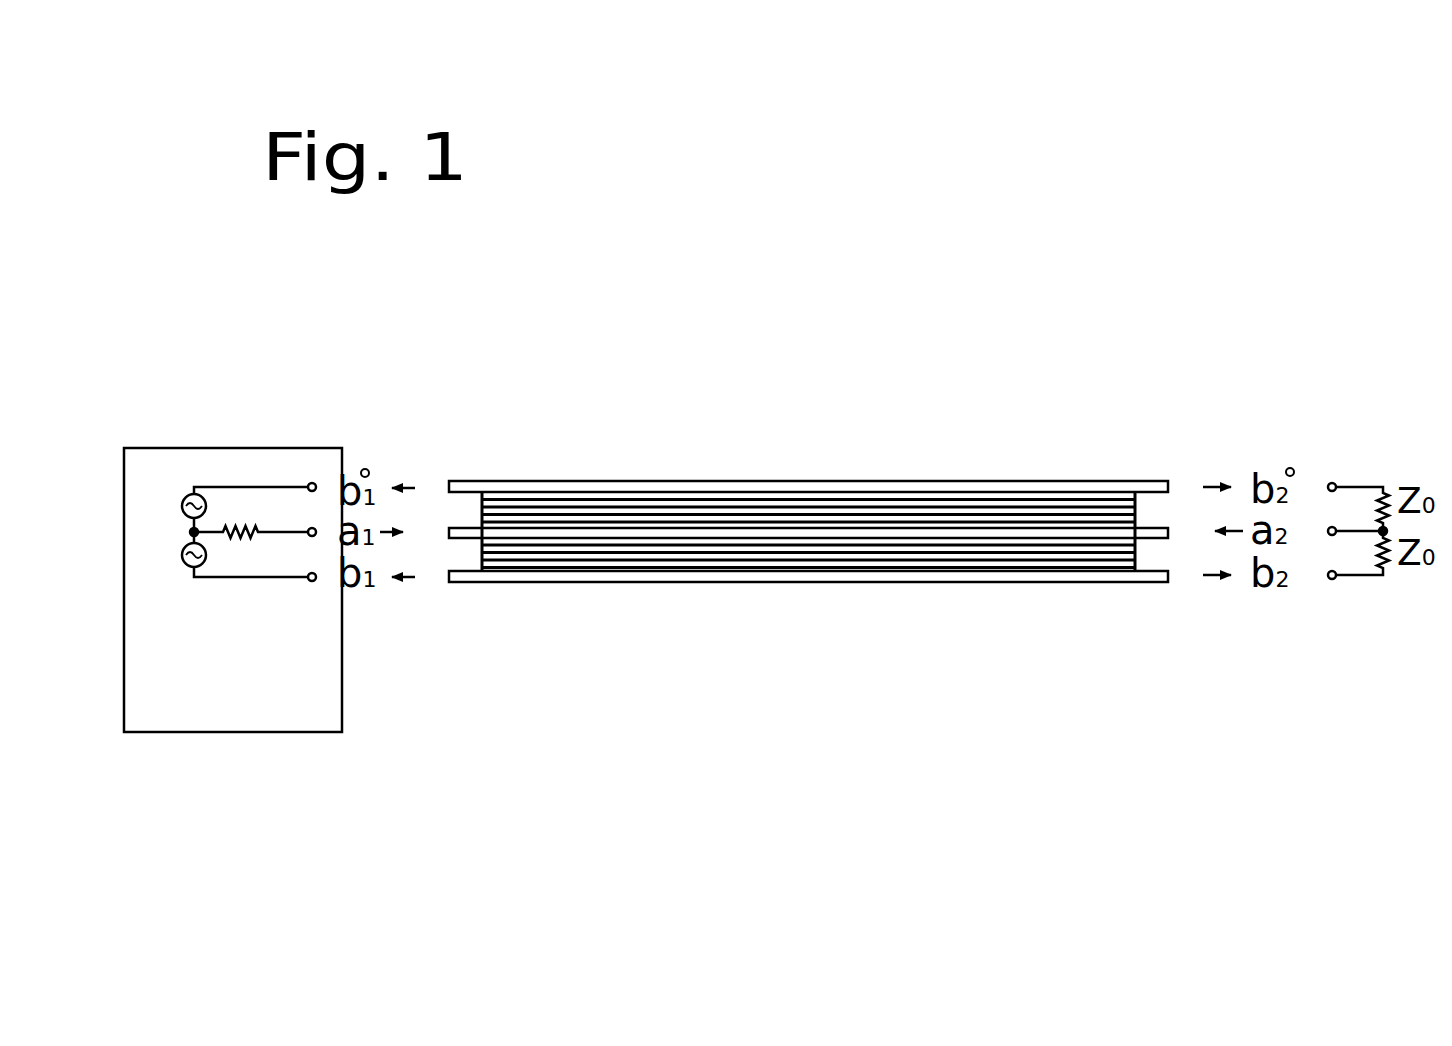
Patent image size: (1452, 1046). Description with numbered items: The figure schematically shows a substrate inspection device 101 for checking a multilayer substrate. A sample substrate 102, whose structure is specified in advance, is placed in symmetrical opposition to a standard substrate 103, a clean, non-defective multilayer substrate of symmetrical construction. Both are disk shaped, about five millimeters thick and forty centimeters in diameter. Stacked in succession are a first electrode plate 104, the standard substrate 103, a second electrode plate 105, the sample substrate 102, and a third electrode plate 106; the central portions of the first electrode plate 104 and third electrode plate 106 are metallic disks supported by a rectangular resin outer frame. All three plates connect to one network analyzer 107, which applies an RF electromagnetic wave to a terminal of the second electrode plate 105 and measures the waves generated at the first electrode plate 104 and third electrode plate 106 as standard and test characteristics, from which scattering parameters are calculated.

The substrate inspection device 101 is at (1160, 362).
The sample substrate 102 is at (842, 556).
The standard substrate 103 is at (903, 515).
The first electrode plate 104 is at (455, 481).
The second electrode plate 105 is at (462, 530).
The third electrode plate 106 is at (463, 582).
The network analyzer 107 is at (220, 448).